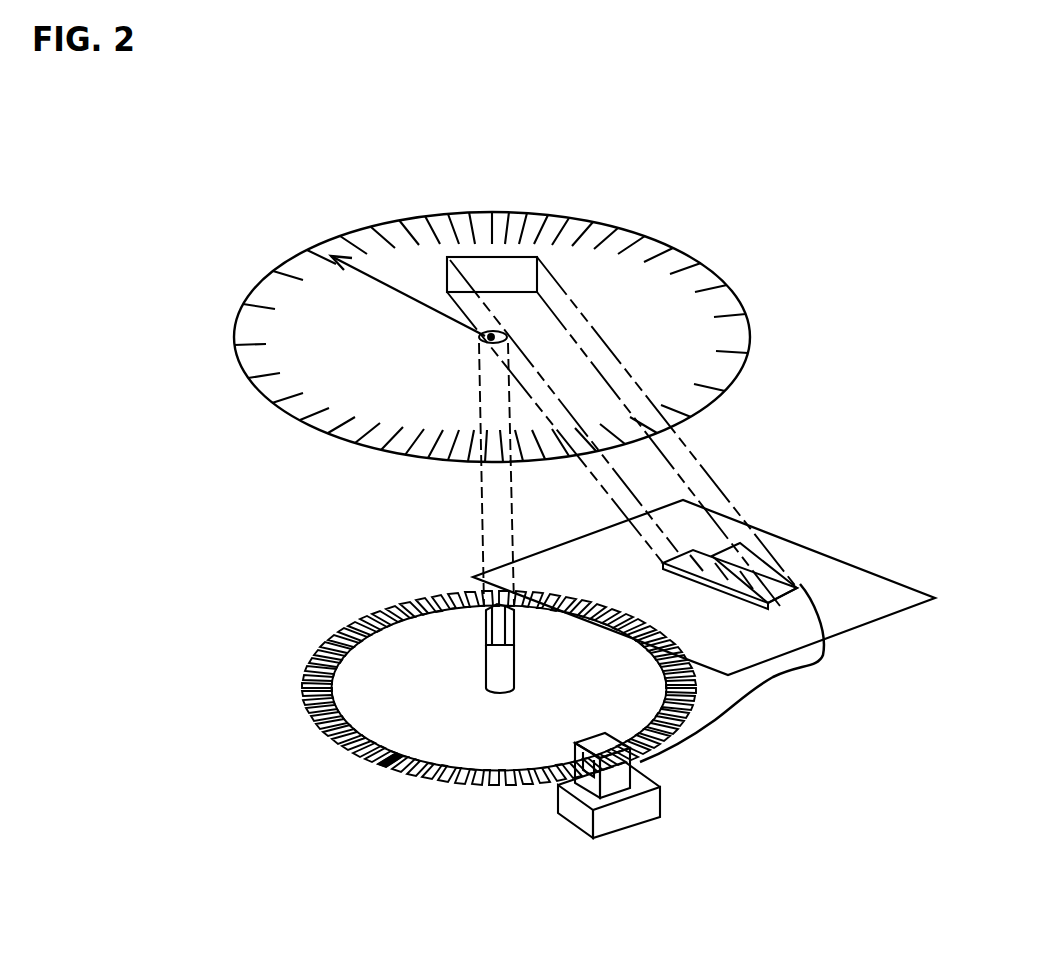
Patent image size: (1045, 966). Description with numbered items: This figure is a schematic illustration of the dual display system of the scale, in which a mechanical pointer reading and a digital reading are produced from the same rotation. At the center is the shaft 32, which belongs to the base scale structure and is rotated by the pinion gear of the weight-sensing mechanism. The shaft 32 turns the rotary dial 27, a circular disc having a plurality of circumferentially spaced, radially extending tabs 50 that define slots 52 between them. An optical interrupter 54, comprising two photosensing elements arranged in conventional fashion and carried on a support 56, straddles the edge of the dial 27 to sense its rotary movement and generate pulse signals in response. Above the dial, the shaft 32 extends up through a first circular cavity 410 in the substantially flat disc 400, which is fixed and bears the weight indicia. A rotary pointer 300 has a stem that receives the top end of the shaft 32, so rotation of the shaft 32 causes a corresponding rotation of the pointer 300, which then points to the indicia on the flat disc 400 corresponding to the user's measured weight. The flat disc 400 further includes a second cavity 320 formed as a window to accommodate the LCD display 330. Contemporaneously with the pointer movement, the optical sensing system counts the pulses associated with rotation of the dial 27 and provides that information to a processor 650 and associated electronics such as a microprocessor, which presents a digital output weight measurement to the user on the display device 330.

The flat disc 400 is at (270, 245).
The second cavity 320 is at (493, 265).
The rotary pointer 300 is at (357, 270).
The first circular cavity 410 is at (486, 343).
The processor 650 is at (795, 575).
The LCD display 330 is at (779, 598).
The shaft 32 is at (486, 663).
The tabs 50 is at (355, 753).
The slots 52 is at (389, 764).
The rotary dial 27 is at (423, 824).
The optical interrupter 54 is at (613, 787).
The support 56 is at (573, 815).